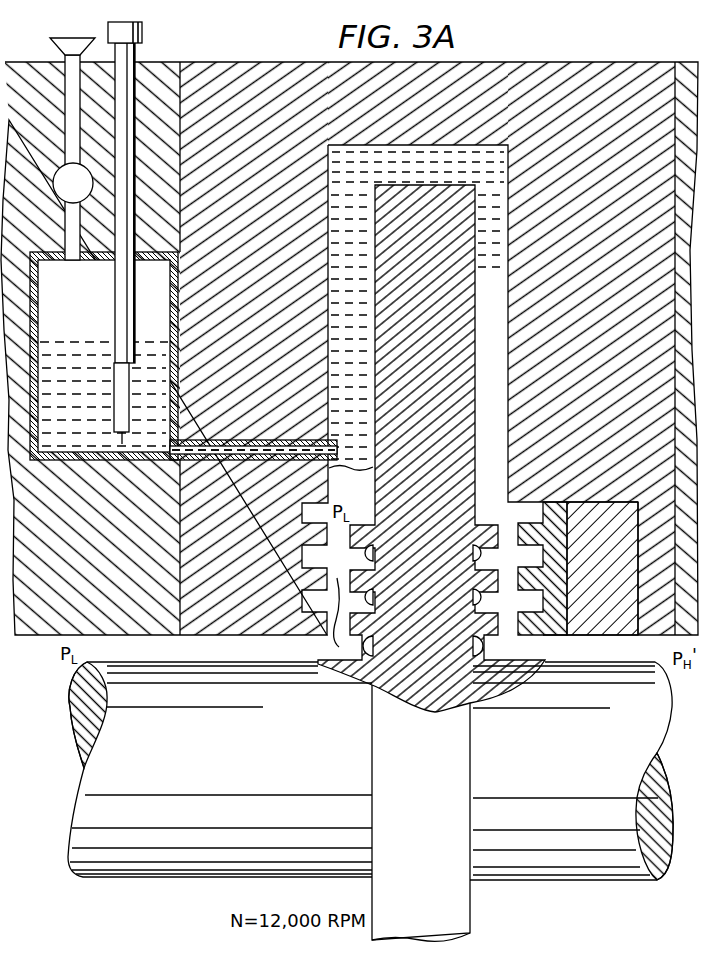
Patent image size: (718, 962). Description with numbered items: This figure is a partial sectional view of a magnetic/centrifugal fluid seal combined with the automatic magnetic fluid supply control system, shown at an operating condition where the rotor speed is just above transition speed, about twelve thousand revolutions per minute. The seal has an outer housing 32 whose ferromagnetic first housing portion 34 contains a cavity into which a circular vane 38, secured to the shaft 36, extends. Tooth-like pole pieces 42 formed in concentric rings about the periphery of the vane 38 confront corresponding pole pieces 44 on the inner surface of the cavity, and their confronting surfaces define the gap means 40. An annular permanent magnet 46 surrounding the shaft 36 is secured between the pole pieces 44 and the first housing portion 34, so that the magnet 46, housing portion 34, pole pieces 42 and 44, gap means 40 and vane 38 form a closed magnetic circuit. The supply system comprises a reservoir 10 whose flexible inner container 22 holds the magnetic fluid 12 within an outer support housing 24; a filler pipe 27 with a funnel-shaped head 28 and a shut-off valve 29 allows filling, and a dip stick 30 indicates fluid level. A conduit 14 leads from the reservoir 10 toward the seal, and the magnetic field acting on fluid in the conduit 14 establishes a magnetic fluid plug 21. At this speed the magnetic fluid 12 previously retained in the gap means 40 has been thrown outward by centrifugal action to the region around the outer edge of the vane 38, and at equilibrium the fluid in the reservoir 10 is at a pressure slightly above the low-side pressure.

The reservoir 10 is at (145, 273).
The magnetic fluid 12 is at (76, 348).
The conduit 14 is at (283, 438).
The magnetic fluid plug 21 is at (222, 438).
The inner container 22 is at (168, 322).
The outer support housing 24 is at (172, 62).
The filler pipe 27 is at (64, 88).
The funnel-shaped head 28 is at (54, 44).
The shut-off valve 29 is at (57, 171).
The dip stick 30 is at (143, 36).
The outer housing 32 is at (281, 40).
The first housing portion 34 is at (265, 344).
The shaft 36 is at (572, 810).
The circular vane 38 is at (437, 378).
The gap means 40 is at (321, 640).
The pole pieces 42 is at (376, 563).
The pole pieces 44 is at (282, 613).
The permanent magnet 46 is at (618, 510).